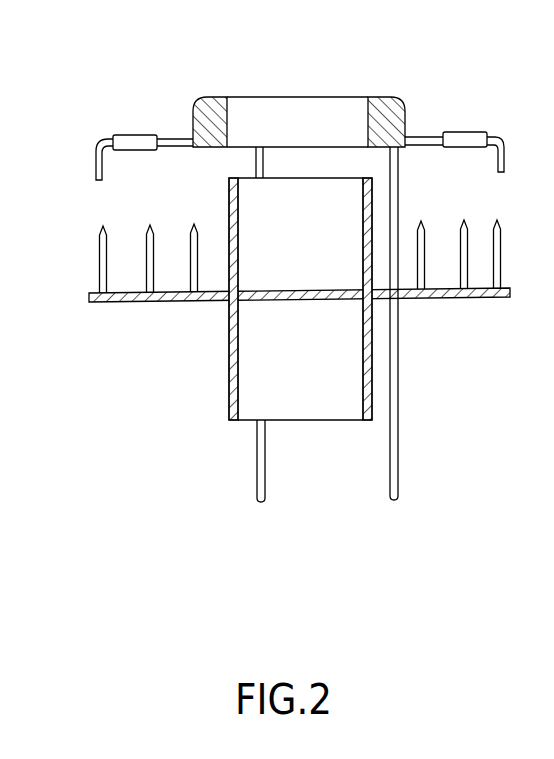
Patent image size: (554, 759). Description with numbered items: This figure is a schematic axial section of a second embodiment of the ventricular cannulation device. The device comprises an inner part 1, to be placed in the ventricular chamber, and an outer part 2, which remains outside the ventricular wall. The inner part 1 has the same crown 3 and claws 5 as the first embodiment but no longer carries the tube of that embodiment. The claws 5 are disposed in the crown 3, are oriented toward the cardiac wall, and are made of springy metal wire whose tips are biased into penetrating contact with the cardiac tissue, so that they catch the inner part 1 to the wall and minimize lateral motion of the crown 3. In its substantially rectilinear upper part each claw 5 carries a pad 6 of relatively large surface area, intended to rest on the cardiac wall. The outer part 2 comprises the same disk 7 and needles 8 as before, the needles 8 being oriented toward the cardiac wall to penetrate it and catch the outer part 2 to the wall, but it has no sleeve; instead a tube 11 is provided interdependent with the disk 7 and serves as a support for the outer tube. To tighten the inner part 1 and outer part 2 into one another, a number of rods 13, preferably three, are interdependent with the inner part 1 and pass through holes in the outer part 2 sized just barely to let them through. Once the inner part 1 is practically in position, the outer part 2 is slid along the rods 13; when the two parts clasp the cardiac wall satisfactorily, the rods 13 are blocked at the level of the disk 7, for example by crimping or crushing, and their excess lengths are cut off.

The inner part 1 is at (397, 89).
The outer part 2 is at (423, 322).
The crown 3 is at (213, 97).
The claws 5 is at (104, 142).
The pad 6 is at (130, 135).
The disk 7 is at (505, 298).
The needles 8 is at (503, 232).
The tube 11 is at (232, 397).
The rods 13 is at (265, 492).